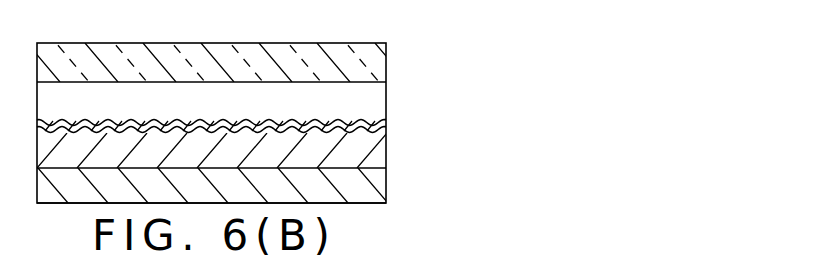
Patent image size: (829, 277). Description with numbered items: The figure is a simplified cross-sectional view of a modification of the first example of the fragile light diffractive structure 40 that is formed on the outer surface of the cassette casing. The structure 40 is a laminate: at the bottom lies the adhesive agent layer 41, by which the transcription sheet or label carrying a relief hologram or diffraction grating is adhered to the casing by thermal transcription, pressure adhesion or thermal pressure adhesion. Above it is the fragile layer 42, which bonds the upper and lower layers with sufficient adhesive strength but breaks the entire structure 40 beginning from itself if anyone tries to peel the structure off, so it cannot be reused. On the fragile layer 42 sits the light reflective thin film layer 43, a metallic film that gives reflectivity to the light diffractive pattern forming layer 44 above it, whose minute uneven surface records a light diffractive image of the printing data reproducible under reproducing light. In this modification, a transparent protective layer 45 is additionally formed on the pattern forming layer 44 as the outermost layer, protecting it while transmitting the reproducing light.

The fragile light diffractive structure 40 is at (330, 38).
The adhesive agent layer 41 is at (380, 188).
The fragile layer 42 is at (382, 155).
The light reflective thin film layer 43 is at (383, 128).
The light diffractive pattern forming layer 44 is at (377, 98).
The transparent protective layer 45 is at (380, 62).